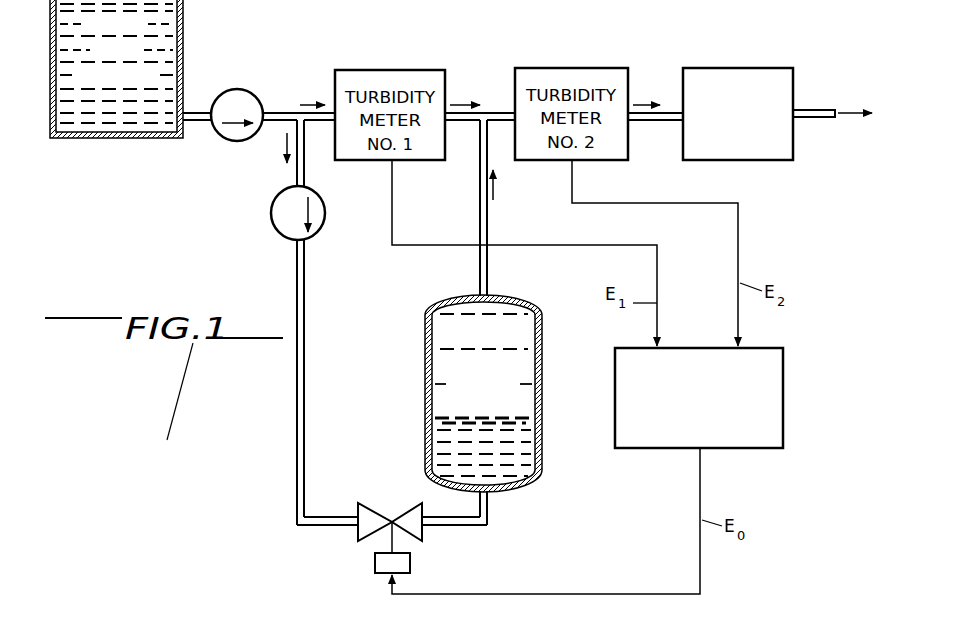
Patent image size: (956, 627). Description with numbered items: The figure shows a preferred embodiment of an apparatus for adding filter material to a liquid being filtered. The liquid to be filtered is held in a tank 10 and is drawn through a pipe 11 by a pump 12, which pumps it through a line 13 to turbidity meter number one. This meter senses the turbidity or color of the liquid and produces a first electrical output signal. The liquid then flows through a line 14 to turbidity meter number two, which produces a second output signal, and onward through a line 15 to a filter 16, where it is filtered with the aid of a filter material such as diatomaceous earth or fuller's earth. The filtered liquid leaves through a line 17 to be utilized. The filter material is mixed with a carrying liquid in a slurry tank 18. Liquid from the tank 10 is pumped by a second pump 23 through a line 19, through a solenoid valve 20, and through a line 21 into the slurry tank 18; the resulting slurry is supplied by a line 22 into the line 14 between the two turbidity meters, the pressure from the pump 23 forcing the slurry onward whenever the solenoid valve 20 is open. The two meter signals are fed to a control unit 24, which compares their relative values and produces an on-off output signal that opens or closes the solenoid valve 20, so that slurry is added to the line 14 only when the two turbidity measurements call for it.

The tank 10 is at (183, 22).
The pipe 11 is at (193, 112).
The pump 12 is at (247, 90).
The line 13 is at (286, 112).
The line 14 is at (488, 110).
The line 15 is at (672, 110).
The filter 16 is at (735, 68).
The line 17 is at (818, 119).
The slurry tank 18 is at (426, 374).
The line 19 is at (296, 278).
The solenoid valve 20 is at (368, 503).
The line 21 is at (488, 511).
The line 22 is at (490, 262).
The pump 23 is at (270, 213).
The control unit 24 is at (785, 412).